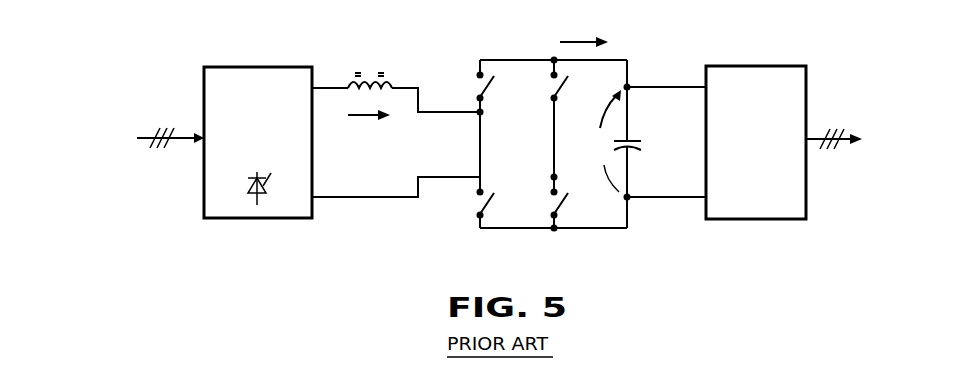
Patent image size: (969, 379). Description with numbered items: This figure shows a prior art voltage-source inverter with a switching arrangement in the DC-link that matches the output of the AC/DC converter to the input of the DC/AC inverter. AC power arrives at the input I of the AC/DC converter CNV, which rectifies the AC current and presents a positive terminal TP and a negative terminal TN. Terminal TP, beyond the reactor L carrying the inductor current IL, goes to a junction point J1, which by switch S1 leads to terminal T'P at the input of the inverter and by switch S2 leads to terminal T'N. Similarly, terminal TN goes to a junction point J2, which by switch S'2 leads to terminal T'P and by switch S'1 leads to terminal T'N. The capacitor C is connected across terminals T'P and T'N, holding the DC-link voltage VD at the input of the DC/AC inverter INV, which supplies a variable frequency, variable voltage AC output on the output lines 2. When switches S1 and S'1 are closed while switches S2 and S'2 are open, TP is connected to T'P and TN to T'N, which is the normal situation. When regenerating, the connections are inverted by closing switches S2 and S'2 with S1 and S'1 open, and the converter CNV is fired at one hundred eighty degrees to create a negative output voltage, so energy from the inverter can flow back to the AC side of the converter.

The AC power supply input I is at (150, 134).
The AC/DC converter CNV is at (254, 66).
The reactor L is at (350, 86).
The inductor current IL is at (478, 80).
The positive terminal TP is at (409, 87).
The negative terminal TN is at (380, 198).
The junction point J1 is at (478, 114).
The junction point J2 is at (552, 175).
The switch S1 is at (488, 88).
The switch S2 is at (563, 85).
The switch S'2 is at (499, 207).
The switch S'1 is at (574, 210).
The positive input terminal of the inverter T'P is at (662, 52).
The negative input terminal of the inverter T'N is at (655, 230).
The capacitor C is at (642, 147).
The DC-link voltage VD is at (606, 141).
The DC/AC inverter INV is at (732, 66).
The output lines 2 is at (812, 138).